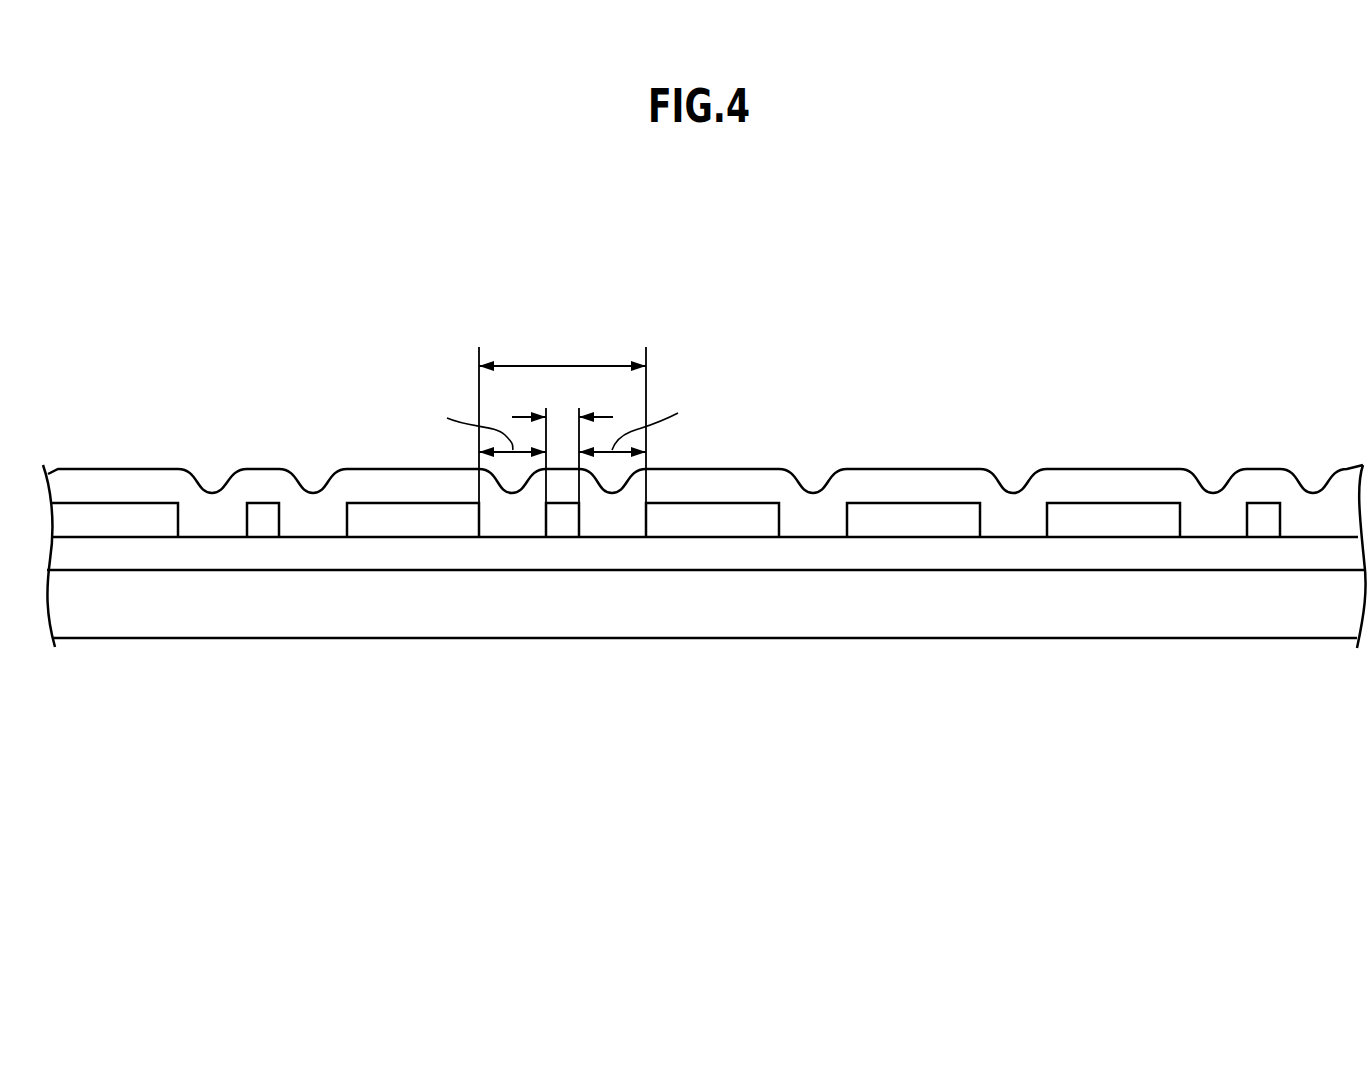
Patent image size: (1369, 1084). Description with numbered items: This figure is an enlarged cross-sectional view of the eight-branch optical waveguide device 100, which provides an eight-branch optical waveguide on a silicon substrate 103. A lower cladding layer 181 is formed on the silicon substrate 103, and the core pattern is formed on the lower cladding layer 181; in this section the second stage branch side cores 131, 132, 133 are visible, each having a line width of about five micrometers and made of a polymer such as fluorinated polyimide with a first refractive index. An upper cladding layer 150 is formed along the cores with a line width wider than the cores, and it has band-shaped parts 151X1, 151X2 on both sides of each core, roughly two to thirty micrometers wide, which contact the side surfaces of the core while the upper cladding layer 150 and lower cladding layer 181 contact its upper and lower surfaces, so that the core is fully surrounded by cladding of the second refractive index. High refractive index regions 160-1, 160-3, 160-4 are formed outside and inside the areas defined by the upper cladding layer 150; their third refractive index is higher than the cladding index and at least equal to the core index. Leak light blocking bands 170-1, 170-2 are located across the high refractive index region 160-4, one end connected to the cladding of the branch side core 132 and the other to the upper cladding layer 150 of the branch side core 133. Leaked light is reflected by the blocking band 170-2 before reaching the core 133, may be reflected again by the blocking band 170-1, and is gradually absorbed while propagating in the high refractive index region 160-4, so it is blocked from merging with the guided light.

The 8-branch optical waveguide device 100 is at (1152, 379).
The silicon substrate 103 is at (1267, 608).
The second stage branch side core 131 is at (260, 510).
The second stage branch side core 132 is at (567, 530).
The second stage branch side core 133 is at (1260, 510).
The upper cladding layer 150 is at (248, 477).
The band-shaped part 151X1 is at (313, 528).
The band-shaped part 151X2 is at (210, 528).
The high refractive index region 160-1 is at (99, 528).
The high refractive index region 160-3 is at (385, 530).
The high refractive index region 160-4 is at (743, 530).
The leak light blocking band 170-1 is at (808, 510).
The leak light blocking band 170-2 is at (1012, 510).
The lower cladding layer 181 is at (1165, 553).